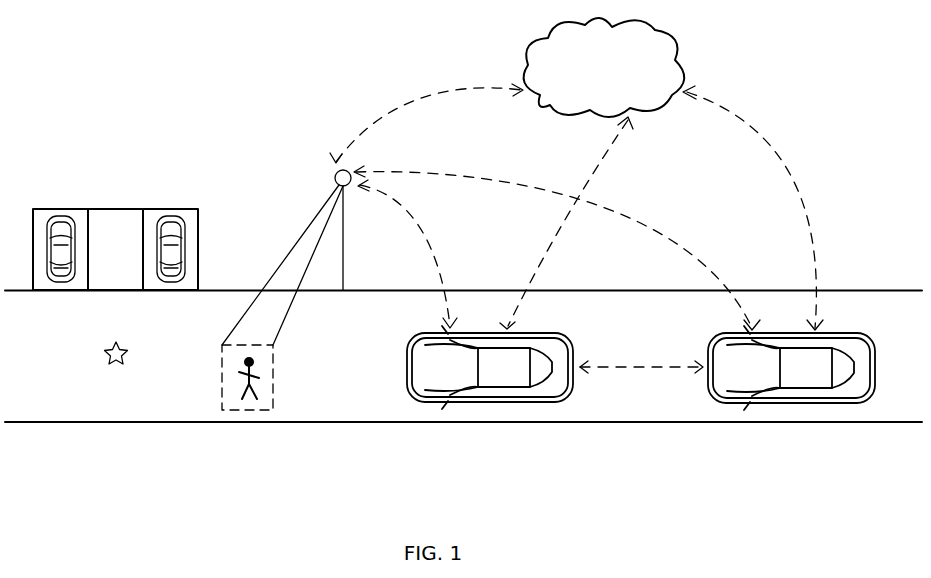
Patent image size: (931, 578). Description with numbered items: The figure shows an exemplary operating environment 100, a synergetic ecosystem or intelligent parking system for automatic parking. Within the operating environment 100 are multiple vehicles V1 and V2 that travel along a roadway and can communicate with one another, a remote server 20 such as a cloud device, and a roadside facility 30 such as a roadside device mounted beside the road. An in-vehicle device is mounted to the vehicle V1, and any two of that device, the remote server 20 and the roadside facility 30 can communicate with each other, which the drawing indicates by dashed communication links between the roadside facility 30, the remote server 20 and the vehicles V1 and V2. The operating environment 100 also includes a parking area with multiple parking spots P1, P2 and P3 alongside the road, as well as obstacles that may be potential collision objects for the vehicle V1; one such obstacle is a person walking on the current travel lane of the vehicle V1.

The operating environment 100 is at (272, 31).
The remote server 20 is at (604, 67).
The roadside facility 30 is at (336, 172).
The parking spot P1 is at (57, 208).
The parking spot P2 is at (108, 208).
The parking spot P3 is at (165, 208).
The vehicle V1 is at (497, 399).
The vehicle V2 is at (813, 400).